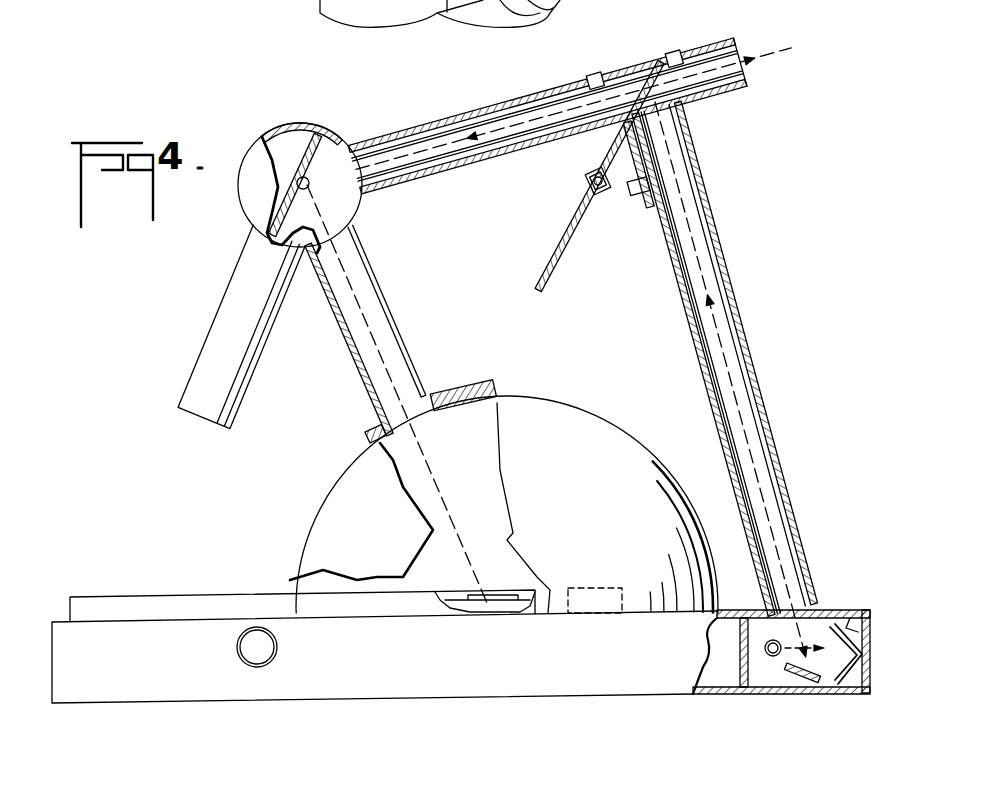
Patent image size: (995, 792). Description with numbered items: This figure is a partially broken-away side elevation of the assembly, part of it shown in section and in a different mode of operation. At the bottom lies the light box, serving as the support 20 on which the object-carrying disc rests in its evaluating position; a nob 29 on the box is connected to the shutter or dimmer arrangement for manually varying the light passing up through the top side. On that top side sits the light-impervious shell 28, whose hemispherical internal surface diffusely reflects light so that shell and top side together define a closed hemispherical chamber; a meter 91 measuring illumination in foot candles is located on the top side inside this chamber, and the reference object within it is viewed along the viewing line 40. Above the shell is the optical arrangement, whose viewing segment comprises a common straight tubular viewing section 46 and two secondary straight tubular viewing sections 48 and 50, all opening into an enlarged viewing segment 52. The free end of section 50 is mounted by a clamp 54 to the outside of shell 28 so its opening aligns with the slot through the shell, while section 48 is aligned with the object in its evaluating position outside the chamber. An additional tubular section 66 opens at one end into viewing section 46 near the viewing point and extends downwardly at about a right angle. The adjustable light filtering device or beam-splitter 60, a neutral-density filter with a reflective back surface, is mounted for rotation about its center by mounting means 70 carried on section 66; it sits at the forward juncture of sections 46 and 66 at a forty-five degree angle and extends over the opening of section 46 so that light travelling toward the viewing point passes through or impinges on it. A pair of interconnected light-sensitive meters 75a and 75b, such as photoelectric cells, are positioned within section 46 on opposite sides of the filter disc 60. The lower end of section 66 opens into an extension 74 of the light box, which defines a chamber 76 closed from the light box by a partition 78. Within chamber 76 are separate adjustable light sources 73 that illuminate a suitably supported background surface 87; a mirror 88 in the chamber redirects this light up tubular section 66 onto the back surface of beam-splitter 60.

The support 20 is at (52, 622).
The light impervious shell 28 is at (616, 442).
The nob 29 is at (247, 652).
The viewing line 40 is at (435, 470).
The common straight tubular viewing section 46 is at (520, 100).
The secondary straight tubular viewing section 48 is at (238, 282).
The secondary straight tubular viewing section 50 is at (403, 320).
The enlarged viewing segment 52 is at (312, 126).
The clamp 54 is at (470, 388).
The adjustable light filtering device 60 is at (540, 272).
The additional tubular section 66 is at (722, 226).
The mounting means 70 is at (640, 190).
The light source 73 is at (771, 640).
The extension of light box 74 is at (860, 622).
The light sensitive meter 75a is at (604, 80).
The light sensitive meter 75b is at (682, 57).
The chamber 76 is at (846, 616).
The partition 78 is at (722, 688).
The surface 87 is at (860, 652).
The mirror 88 is at (792, 682).
The meter 91 is at (592, 588).